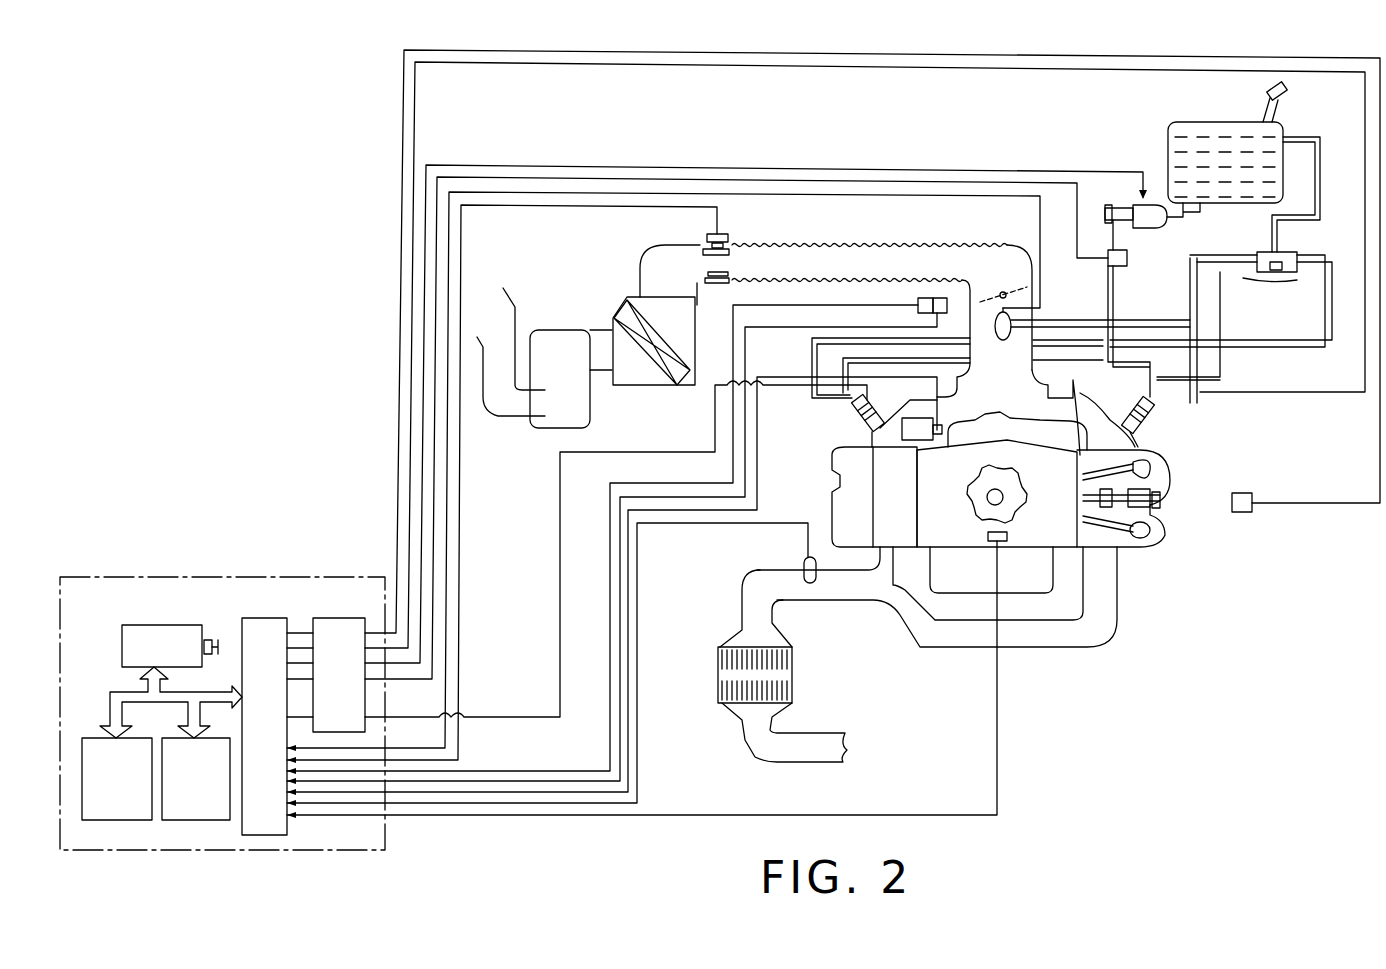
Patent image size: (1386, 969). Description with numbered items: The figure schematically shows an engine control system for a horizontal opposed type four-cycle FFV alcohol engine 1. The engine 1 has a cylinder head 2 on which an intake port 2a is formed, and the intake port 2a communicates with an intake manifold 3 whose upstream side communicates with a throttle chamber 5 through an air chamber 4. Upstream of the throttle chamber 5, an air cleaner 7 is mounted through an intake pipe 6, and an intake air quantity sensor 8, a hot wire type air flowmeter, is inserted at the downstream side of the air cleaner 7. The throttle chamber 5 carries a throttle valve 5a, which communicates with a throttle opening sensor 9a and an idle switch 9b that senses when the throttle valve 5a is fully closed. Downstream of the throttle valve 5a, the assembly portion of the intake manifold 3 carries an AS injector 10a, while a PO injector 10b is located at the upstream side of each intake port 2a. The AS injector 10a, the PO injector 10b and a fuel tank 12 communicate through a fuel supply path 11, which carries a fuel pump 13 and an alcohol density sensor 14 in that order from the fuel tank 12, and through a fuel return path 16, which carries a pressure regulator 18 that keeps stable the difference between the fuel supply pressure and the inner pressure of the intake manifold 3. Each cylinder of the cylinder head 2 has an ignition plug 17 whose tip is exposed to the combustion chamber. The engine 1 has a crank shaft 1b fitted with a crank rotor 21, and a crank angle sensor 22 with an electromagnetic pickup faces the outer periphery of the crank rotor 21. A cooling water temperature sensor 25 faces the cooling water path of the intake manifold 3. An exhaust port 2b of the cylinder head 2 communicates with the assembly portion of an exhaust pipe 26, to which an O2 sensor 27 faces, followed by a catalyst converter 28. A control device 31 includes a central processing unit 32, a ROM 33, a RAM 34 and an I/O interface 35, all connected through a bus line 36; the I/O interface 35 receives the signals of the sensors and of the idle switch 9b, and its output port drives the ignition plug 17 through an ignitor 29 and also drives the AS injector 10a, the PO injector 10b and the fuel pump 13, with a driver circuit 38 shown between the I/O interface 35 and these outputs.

The engine 1 is at (1120, 590).
The crank shaft 1b is at (987, 497).
The cylinder head 2 is at (830, 478).
The intake port 2a is at (1083, 462).
The exhaust port 2b is at (1085, 538).
The intake manifold 3 is at (1098, 425).
The air chamber 4 is at (1030, 402).
The throttle chamber 5 is at (1033, 292).
The throttle valve 5a is at (1010, 282).
The intake pipe 6 is at (932, 244).
The air cleaner 7 is at (618, 308).
The intake air quantity sensor 8 is at (733, 236).
The throttle opening sensor 9a is at (945, 297).
The idle switch 9b is at (921, 297).
The AS injector 10a is at (1003, 341).
The PO injector 10b is at (855, 425).
The fuel supply path 11 is at (1114, 296).
The fuel tank 12 is at (1168, 137).
The fuel pump 13 is at (1165, 228).
The alcohol density sensor 14 is at (1127, 258).
The fuel return path 16 is at (1190, 318).
The ignition plug 17 is at (1083, 498).
The pressure regulator 18 is at (1300, 253).
The crank rotor 21 is at (1000, 480).
The crank angle sensor 22 is at (990, 537).
The cooling water temperature sensor 25 is at (943, 426).
The exhaust pipe 26 is at (1088, 648).
The O2 sensor 27 is at (805, 565).
The catalyst converter 28 is at (792, 672).
The ignitor 29 is at (1240, 513).
The control device 31 is at (280, 576).
The central processing unit 32 is at (147, 625).
The ROM 33 is at (115, 820).
The RAM 34 is at (198, 820).
The I/O interface 35 is at (262, 618).
The bus line 36 is at (110, 702).
The driver circuit 38 is at (327, 620).